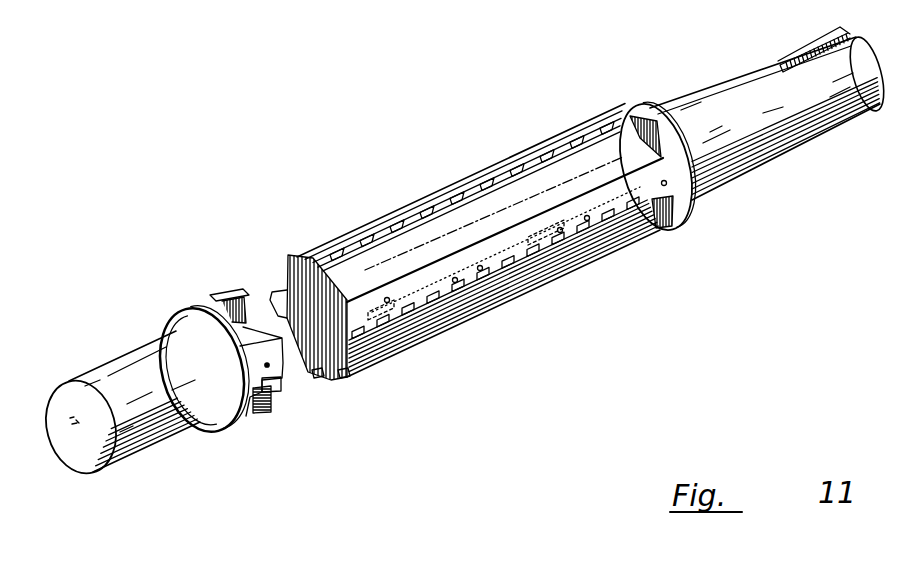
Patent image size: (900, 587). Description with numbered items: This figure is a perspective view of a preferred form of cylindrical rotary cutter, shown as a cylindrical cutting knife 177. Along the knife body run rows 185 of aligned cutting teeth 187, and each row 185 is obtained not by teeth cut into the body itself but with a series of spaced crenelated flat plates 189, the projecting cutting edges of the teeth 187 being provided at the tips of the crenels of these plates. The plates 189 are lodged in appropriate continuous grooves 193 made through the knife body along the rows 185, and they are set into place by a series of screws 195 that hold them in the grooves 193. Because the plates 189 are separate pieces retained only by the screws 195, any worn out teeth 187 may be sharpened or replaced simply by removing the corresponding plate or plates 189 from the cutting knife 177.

The cylindrical cutting knife 177 is at (438, 187).
The row of aligned cutting teeth 185 is at (352, 245).
The cutting teeth 187 is at (515, 266).
The crenelated flat plate 189 is at (533, 250).
The continuous groove 193 is at (343, 375).
The screw 195 is at (560, 228).